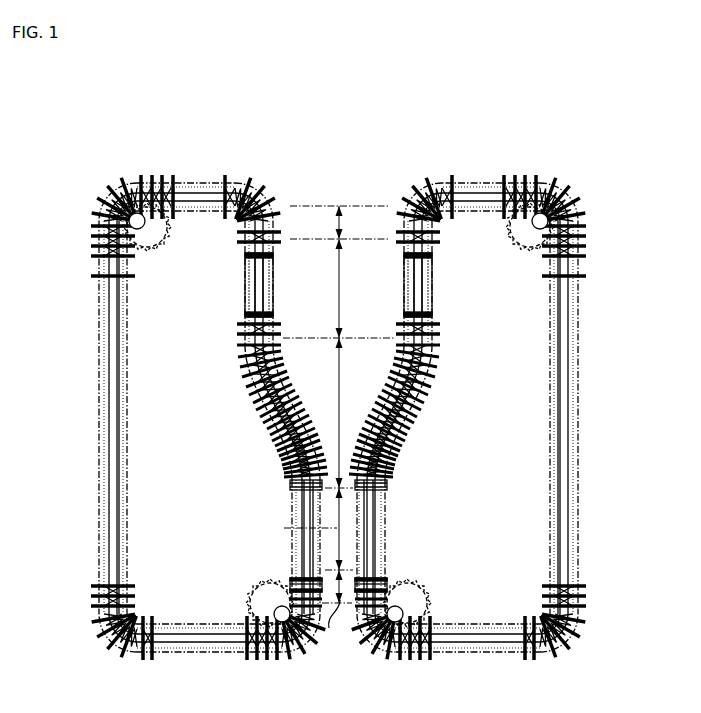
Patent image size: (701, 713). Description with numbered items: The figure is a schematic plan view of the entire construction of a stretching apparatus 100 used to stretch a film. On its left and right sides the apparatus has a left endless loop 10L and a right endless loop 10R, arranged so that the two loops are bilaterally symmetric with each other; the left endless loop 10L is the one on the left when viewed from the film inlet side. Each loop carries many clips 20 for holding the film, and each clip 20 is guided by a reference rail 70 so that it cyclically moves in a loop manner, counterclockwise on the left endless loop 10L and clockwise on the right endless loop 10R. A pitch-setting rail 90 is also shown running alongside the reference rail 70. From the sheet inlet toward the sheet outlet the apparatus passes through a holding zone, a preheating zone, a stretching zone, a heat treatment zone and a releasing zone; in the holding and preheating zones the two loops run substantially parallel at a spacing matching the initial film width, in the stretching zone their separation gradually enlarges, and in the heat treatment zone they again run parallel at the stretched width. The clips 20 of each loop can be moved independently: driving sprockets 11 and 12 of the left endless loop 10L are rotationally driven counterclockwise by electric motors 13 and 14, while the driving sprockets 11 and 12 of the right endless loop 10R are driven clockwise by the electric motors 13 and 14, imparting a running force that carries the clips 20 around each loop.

The stretching apparatus 100 is at (340, 378).
The left endless loop 10L is at (92, 370).
The right endless loop 10R is at (585, 370).
The driving sprocket 11 is at (264, 582).
The driving sprocket 12 is at (153, 250).
The electric motor 13 is at (251, 604).
The electric motor 14 is at (171, 238).
The clip 20 is at (266, 388).
The reference rail 70 is at (276, 260).
The pitch-setting rail 90 is at (252, 298).